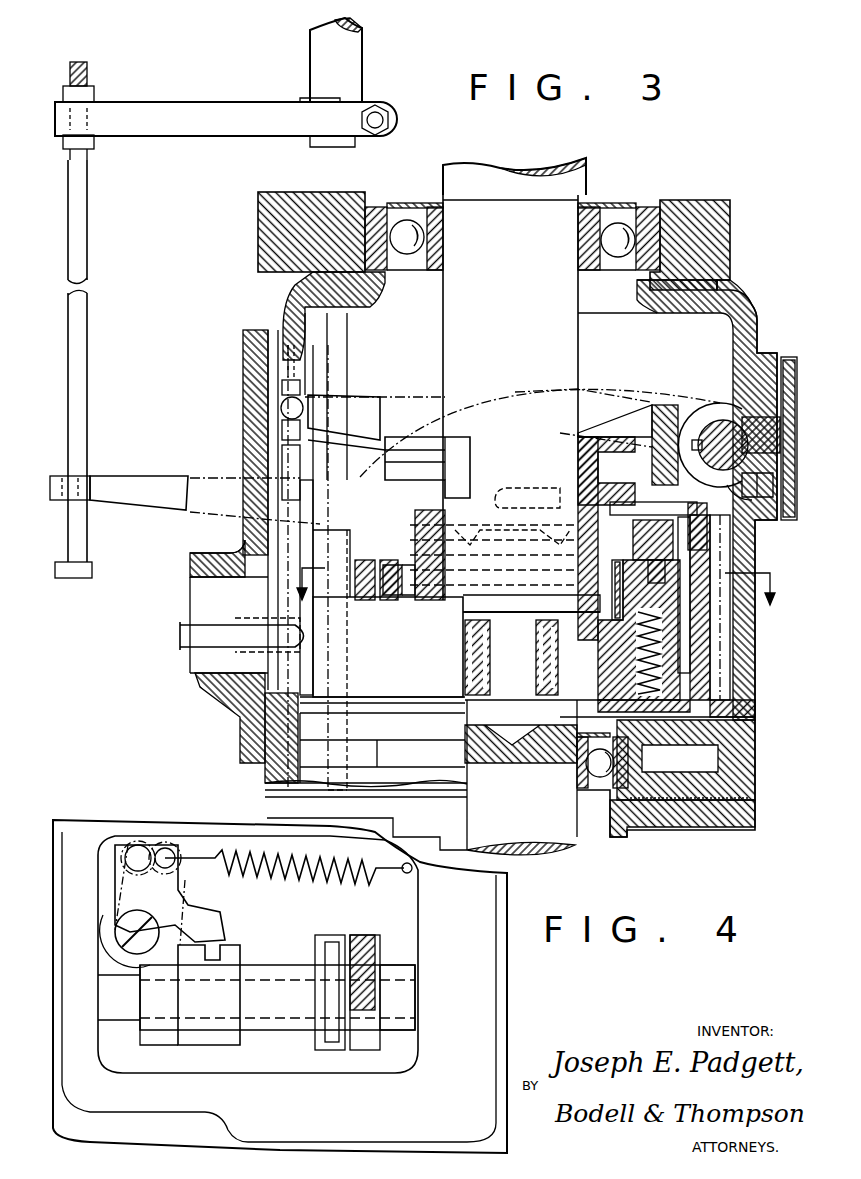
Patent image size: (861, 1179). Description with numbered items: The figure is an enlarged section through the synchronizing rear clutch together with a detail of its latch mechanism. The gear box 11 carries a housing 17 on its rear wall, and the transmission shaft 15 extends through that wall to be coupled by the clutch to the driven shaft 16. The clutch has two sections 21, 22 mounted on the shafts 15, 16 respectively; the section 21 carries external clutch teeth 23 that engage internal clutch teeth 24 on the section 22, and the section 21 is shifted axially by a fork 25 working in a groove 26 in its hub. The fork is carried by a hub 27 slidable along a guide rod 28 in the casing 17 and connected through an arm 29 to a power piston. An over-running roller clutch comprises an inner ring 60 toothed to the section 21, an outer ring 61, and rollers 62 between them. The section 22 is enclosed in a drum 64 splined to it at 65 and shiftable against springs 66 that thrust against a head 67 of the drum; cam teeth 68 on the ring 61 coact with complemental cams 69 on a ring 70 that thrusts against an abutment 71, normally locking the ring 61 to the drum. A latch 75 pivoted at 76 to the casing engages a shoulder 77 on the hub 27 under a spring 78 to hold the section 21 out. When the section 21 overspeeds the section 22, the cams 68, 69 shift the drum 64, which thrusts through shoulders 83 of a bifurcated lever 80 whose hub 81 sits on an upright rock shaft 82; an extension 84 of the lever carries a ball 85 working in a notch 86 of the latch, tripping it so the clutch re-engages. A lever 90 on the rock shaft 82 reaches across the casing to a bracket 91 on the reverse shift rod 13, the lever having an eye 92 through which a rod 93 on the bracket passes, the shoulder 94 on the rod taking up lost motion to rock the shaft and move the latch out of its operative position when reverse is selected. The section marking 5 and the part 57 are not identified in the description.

In FIG. 3, the section line 5- 5 is at (535, 600).
In FIG. 3, the gear box 11 is at (724, 232).
In FIG. 3, the reverse shift rod 13 is at (316, 56).
In FIG. 3, the driven transmission shaft 15 is at (582, 184).
In FIG. 3, the driven shaft 16 is at (582, 838).
In FIG. 3, the housing 17 is at (755, 322).
In FIG. 4, the housing 17 is at (78, 828).
In FIG. 3, the clutch section 21 is at (578, 573).
In FIG. 3, the clutch section 22 is at (540, 656).
In FIG. 3, the external clutch teeth 23 is at (612, 596).
In FIG. 3, the internal clutch teeth 24 is at (585, 600).
In FIG. 3, the fork 25 is at (427, 518).
In FIG. 4, the fork 25 is at (205, 1050).
In FIG. 3, the groove 26 is at (607, 471).
In FIG. 3, the hub 27 is at (275, 549).
In FIG. 4, the hub 27 is at (291, 970).
In FIG. 3, the guide rod 28 is at (285, 590).
In FIG. 4, the guide rod 28 is at (160, 1010).
In FIG. 3, the arm 29 is at (180, 636).
In FIG. 4, the arm 29 is at (375, 952).
In FIG. 3, the bolt 57 is at (54, 104).
In FIG. 3, the inner ring 60 is at (382, 600).
In FIG. 3, the outer ring 61 is at (735, 573).
In FIG. 3, the rollers 62 is at (365, 600).
In FIG. 3, the drum 64 is at (703, 633).
In FIG. 3, the spline 65 is at (681, 655).
In FIG. 3, the springs 66 is at (662, 682).
In FIG. 3, the head 67 is at (713, 715).
In FIG. 3, the cam teeth 68 is at (450, 555).
In FIG. 3, the cam means 69 is at (420, 532).
In FIG. 3, the ring 70 is at (655, 522).
In FIG. 3, the abutment 71 is at (700, 512).
In FIG. 3, the latch 75 is at (290, 392).
In FIG. 4, the latch 75 is at (207, 917).
In FIG. 4, the pivot 76 is at (122, 933).
In FIG. 3, the shoulder 77 is at (290, 522).
In FIG. 4, the shoulder 77 is at (250, 958).
In FIG. 4, the spring 78 is at (345, 872).
In FIG. 3, the lever 80 is at (632, 418).
In FIG. 3, the hub 81 is at (716, 403).
In FIG. 3, the rock shaft 82 is at (740, 462).
In FIG. 3, the shoulders 83 is at (512, 508).
In FIG. 3, the extension 84 is at (365, 408).
In FIG. 3, the ball 85 is at (283, 410).
In FIG. 4, the ball 85 is at (152, 845).
In FIG. 4, the notch 86 is at (130, 842).
In FIG. 3, the lever 90 is at (142, 483).
In FIG. 3, the bracket 91 is at (219, 128).
In FIG. 3, the eye 92 is at (88, 476).
In FIG. 3, the rod 93 is at (80, 368).
In FIG. 3, the shoulder 94 is at (92, 568).